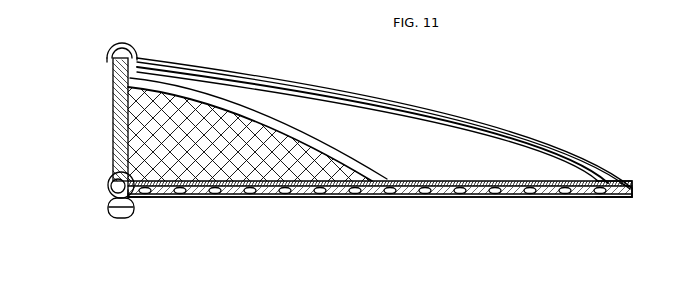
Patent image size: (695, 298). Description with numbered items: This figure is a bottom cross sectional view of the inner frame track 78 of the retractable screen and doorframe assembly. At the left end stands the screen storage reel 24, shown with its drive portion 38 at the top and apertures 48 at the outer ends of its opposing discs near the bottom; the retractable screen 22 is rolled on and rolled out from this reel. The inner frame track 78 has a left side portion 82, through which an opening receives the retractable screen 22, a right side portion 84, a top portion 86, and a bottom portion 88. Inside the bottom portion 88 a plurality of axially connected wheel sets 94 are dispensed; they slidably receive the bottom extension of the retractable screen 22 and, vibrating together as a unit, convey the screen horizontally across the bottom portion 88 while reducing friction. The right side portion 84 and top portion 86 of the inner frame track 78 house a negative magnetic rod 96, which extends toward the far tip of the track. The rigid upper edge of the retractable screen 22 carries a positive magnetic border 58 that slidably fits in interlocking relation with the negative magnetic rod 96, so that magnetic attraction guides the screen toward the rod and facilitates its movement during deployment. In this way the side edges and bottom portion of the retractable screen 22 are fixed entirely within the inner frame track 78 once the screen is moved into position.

The drive portion 38 is at (134, 54).
The screen storage reel 24 is at (112, 110).
The apertures 48 is at (109, 189).
The left side portion 82 is at (137, 198).
The top portion 86 is at (356, 104).
The retractable screen 22 is at (326, 141).
The positive magnetic border 58 is at (361, 158).
The wheel sets 94 is at (382, 200).
The bottom portion 88 is at (263, 199).
The inner frame track 78 is at (572, 200).
The right side portion 84 is at (608, 200).
The negative magnetic rod 96 is at (632, 186).